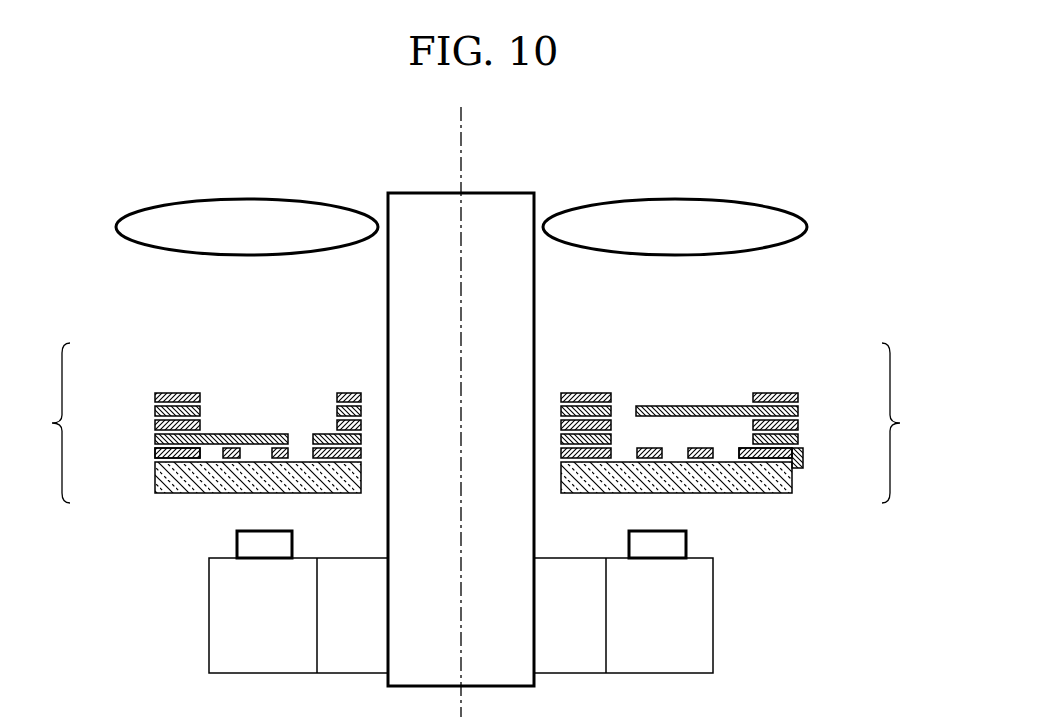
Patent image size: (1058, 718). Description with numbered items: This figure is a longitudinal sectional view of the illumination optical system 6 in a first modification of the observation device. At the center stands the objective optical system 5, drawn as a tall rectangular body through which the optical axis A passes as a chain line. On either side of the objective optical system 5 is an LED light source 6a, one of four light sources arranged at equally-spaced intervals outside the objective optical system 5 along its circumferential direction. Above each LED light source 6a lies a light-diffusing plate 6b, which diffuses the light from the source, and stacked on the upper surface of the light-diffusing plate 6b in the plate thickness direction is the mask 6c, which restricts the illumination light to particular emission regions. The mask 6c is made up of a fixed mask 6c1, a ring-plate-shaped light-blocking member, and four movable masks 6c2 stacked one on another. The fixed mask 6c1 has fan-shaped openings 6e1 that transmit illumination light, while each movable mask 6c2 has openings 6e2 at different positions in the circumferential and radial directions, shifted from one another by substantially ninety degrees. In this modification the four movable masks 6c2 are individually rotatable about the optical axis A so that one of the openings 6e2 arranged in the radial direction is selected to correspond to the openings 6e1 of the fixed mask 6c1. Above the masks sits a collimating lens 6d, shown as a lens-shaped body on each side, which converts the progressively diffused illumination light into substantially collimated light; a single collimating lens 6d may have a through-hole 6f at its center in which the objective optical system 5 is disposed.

The objective optical system 5 is at (386, 191).
The optical axis A is at (459, 123).
The illumination optical system 6 is at (875, 288).
The LED light source 6a is at (237, 545).
The light-diffusing plate 6b is at (155, 490).
The mask 6c is at (476, 423).
The fixed mask 6c1 is at (155, 453).
The movable mask 6c2 is at (155, 398).
The collimating lens 6d is at (116, 227).
The opening of fixed mask 6e1 is at (204, 456).
The opening of movable mask 6e2 is at (203, 394).
The through-hole 6f is at (534, 228).